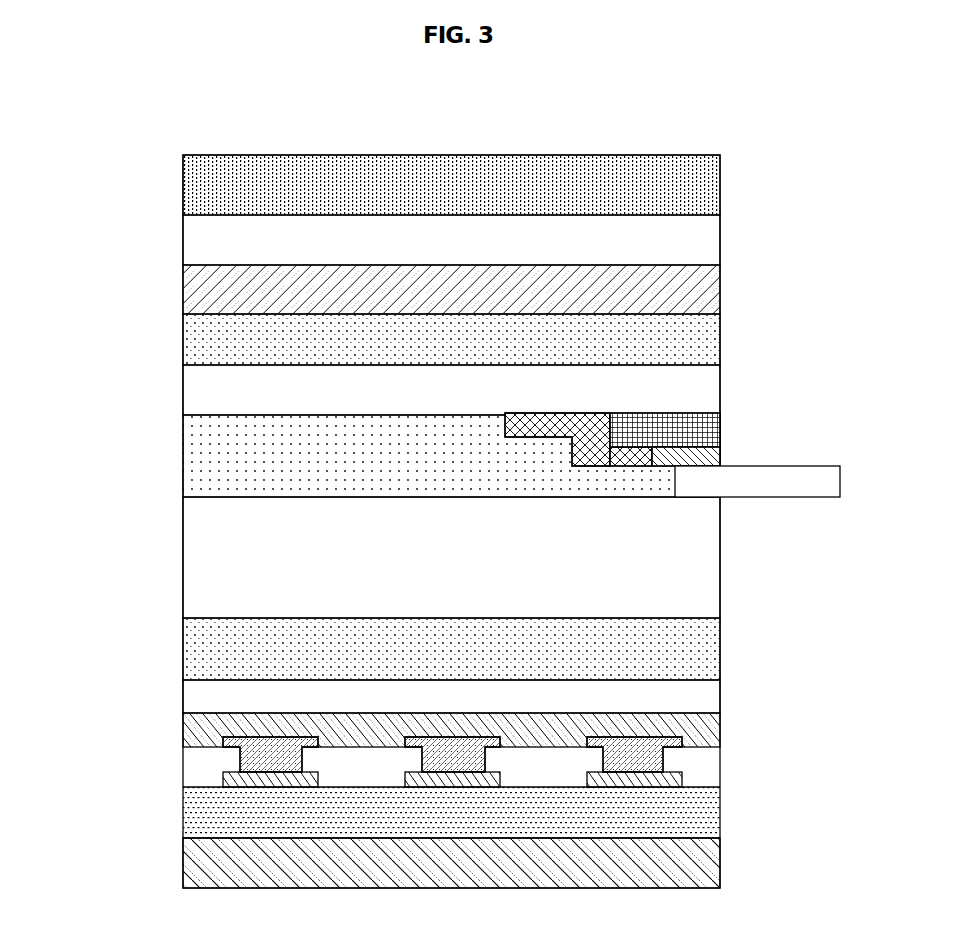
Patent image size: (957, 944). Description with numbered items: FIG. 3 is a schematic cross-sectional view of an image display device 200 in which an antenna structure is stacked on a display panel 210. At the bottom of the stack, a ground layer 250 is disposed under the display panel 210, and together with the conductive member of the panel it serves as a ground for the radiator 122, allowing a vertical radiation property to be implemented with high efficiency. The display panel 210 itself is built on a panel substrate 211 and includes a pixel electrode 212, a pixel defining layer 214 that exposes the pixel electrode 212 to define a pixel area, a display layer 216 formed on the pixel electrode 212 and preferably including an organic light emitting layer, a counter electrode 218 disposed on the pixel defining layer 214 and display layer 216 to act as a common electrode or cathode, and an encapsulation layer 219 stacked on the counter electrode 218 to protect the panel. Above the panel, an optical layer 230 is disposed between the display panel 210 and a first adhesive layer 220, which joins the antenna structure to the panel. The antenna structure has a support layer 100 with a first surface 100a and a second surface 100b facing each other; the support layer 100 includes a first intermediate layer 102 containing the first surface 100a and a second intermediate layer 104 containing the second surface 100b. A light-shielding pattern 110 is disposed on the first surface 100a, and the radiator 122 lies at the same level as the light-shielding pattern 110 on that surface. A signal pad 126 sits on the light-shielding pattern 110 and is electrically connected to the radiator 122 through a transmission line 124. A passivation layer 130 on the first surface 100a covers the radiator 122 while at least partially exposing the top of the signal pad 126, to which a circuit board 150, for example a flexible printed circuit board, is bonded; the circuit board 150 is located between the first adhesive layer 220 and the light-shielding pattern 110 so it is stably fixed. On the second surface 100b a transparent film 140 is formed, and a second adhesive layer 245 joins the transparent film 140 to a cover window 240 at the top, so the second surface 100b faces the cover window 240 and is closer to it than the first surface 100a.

The image display device 200 is at (83, 76).
The cover window 240 is at (183, 192).
The second adhesive layer 245 is at (183, 247).
The transparent film 140 is at (720, 288).
The support layer 100 is at (95, 333).
The second surface 100b is at (232, 311).
The first surface 100a is at (232, 419).
The second intermediate layer 104 is at (183, 345).
The first intermediate layer 102 is at (195, 394).
The passivation layer 130 is at (183, 474).
The radiator 122 is at (578, 413).
The light-shielding pattern 110 is at (720, 428).
The signal pad 126 is at (720, 450).
The transmission line 124 is at (620, 468).
The circuit board 150 is at (824, 476).
The first adhesive layer 220 is at (195, 556).
The optical layer 230 is at (183, 648).
The display panel 210 is at (818, 687).
The encapsulation layer 219 is at (720, 692).
The counter electrode 218 is at (720, 717).
The display layer 216 is at (720, 746).
The pixel defining layer 214 is at (720, 770).
The pixel electrode 212 is at (658, 782).
The panel substrate 211 is at (720, 820).
The ground layer 250 is at (183, 862).